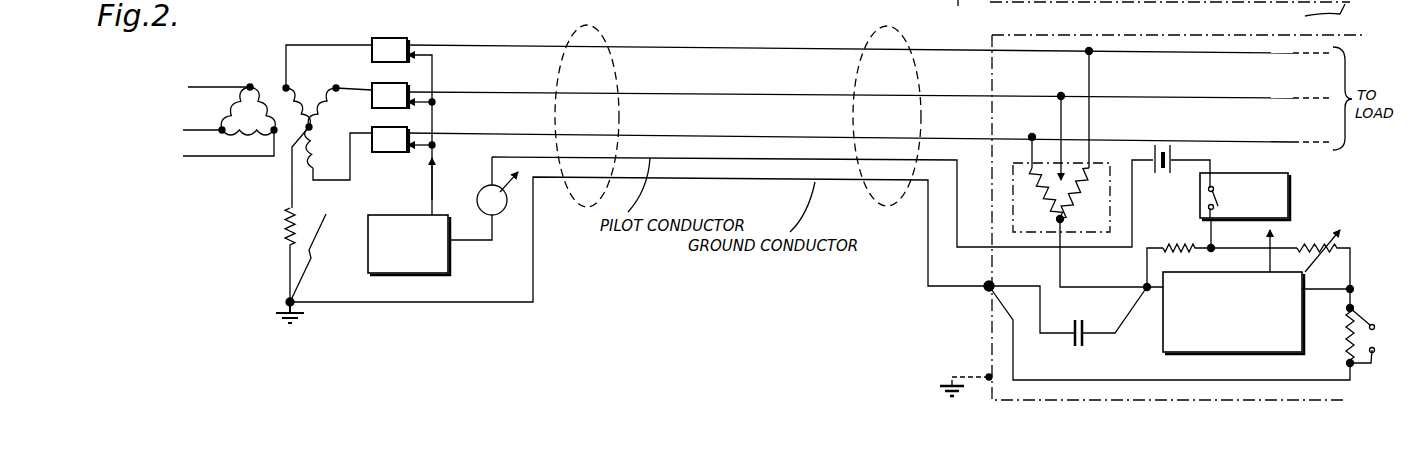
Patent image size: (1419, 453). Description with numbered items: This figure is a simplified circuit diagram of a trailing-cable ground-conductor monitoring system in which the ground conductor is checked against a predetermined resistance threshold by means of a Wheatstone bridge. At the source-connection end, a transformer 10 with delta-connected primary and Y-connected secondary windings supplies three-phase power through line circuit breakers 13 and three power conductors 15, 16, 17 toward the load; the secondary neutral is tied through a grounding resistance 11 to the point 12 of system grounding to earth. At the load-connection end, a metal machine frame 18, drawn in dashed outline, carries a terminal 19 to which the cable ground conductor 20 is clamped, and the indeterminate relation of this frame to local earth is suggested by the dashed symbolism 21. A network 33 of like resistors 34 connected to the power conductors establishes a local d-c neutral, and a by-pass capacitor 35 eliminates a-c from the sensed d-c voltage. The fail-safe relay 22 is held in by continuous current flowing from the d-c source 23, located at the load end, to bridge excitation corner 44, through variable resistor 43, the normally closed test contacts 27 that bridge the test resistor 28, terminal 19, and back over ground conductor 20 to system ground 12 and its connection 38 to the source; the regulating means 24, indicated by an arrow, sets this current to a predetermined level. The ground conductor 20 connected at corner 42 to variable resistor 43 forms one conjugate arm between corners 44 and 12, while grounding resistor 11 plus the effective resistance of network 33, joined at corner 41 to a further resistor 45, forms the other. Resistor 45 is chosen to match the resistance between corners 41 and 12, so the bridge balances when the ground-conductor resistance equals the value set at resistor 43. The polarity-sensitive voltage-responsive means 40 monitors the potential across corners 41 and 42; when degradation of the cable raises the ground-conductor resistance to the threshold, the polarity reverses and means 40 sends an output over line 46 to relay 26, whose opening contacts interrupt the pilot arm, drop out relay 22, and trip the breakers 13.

The transformer 10 is at (275, 84).
The grounding resistance 11 is at (287, 226).
The point of system-grounding 12 is at (286, 302).
The line circuit breakers 13 is at (372, 83).
The power conductor 15 is at (500, 44).
The power conductor 16 is at (508, 90).
The power conductor 17 is at (510, 134).
The machine frame 18 is at (1060, 400).
The terminal 19 is at (986, 289).
The ground conductor 20 is at (533, 262).
The dashed-line symbolism 21 is at (977, 376).
The fail-safe relay 22 is at (394, 283).
The d-c source 23 is at (1170, 168).
The regulating means 24 is at (506, 208).
The relay 26 is at (1290, 207).
The normally closed contacts 27 is at (1380, 330).
The test resistor 28 is at (1347, 340).
The network 33 is at (1110, 184).
The resistor 34 is at (1053, 172).
The by-pass capacitor 35 is at (1100, 314).
The connection 38 is at (308, 247).
The polarity-sensitive voltage-responsive means 40 is at (1236, 354).
The terminal corner 41 is at (1144, 286).
The terminal corner 42 is at (1353, 287).
The variable resistor 43 is at (1323, 250).
The bridge-excitation terminal corner 44 is at (1222, 236).
The resistor 45 is at (1180, 226).
The line 46 is at (1268, 260).